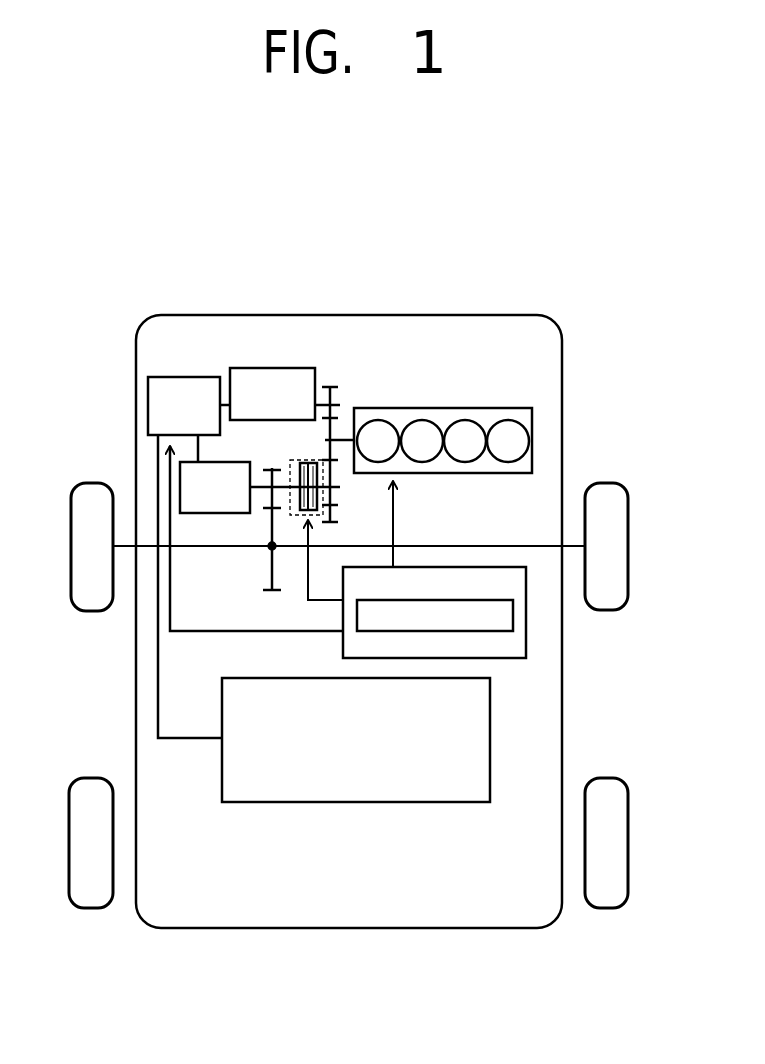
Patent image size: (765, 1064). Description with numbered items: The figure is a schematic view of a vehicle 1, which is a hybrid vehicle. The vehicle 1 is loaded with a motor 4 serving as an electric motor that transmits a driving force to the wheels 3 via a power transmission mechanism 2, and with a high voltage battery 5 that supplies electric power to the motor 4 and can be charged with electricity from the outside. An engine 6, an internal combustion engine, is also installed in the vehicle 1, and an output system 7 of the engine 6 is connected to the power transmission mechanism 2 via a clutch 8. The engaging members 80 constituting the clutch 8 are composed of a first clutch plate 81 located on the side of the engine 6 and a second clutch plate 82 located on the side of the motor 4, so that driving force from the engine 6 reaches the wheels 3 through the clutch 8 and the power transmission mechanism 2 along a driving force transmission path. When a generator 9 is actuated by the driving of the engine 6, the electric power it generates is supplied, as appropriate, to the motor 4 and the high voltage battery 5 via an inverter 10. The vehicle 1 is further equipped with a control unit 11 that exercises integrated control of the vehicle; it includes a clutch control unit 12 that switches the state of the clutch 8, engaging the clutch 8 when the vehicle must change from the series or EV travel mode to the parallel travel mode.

The vehicle 1 is at (447, 276).
The power transmission mechanism 2 is at (535, 545).
The wheels 3 is at (71, 587).
The motor 4 is at (180, 485).
The high voltage battery 5 is at (490, 745).
The engine 6 is at (532, 423).
The output system 7 is at (338, 418).
The clutch 8 is at (309, 406).
The generator 9 is at (251, 368).
The inverter 10 is at (148, 387).
The control unit 11 is at (474, 629).
The clutch control unit 12 is at (514, 632).
The engaging members 80 is at (305, 462).
The first clutch plate 81 is at (317, 510).
The second clutch plate 82 is at (300, 505).